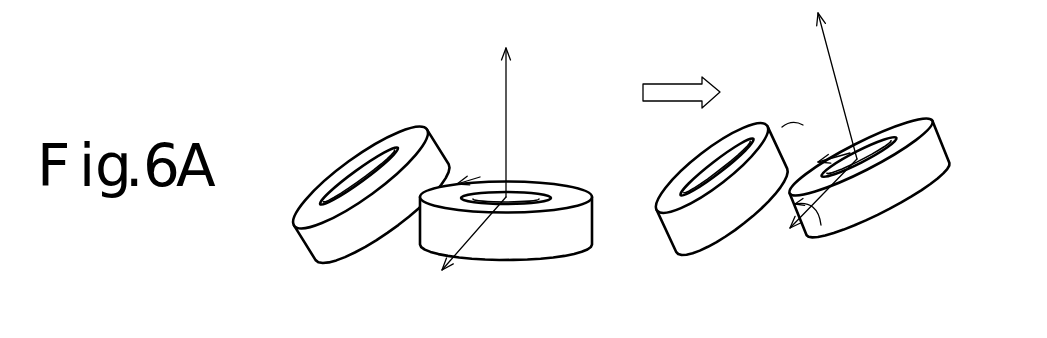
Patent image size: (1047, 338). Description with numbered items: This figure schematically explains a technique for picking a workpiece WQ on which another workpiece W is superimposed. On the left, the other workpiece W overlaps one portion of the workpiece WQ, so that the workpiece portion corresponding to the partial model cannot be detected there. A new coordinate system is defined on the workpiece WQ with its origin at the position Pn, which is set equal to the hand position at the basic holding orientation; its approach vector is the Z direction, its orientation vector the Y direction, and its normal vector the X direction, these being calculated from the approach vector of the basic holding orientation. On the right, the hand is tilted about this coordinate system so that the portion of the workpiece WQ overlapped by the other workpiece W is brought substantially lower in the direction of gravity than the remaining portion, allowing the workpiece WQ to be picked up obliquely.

The other workpiece W is at (312, 207).
The workpiece to be picked WQ is at (538, 245).
The position of new coordinate system Pn is at (685, 183).